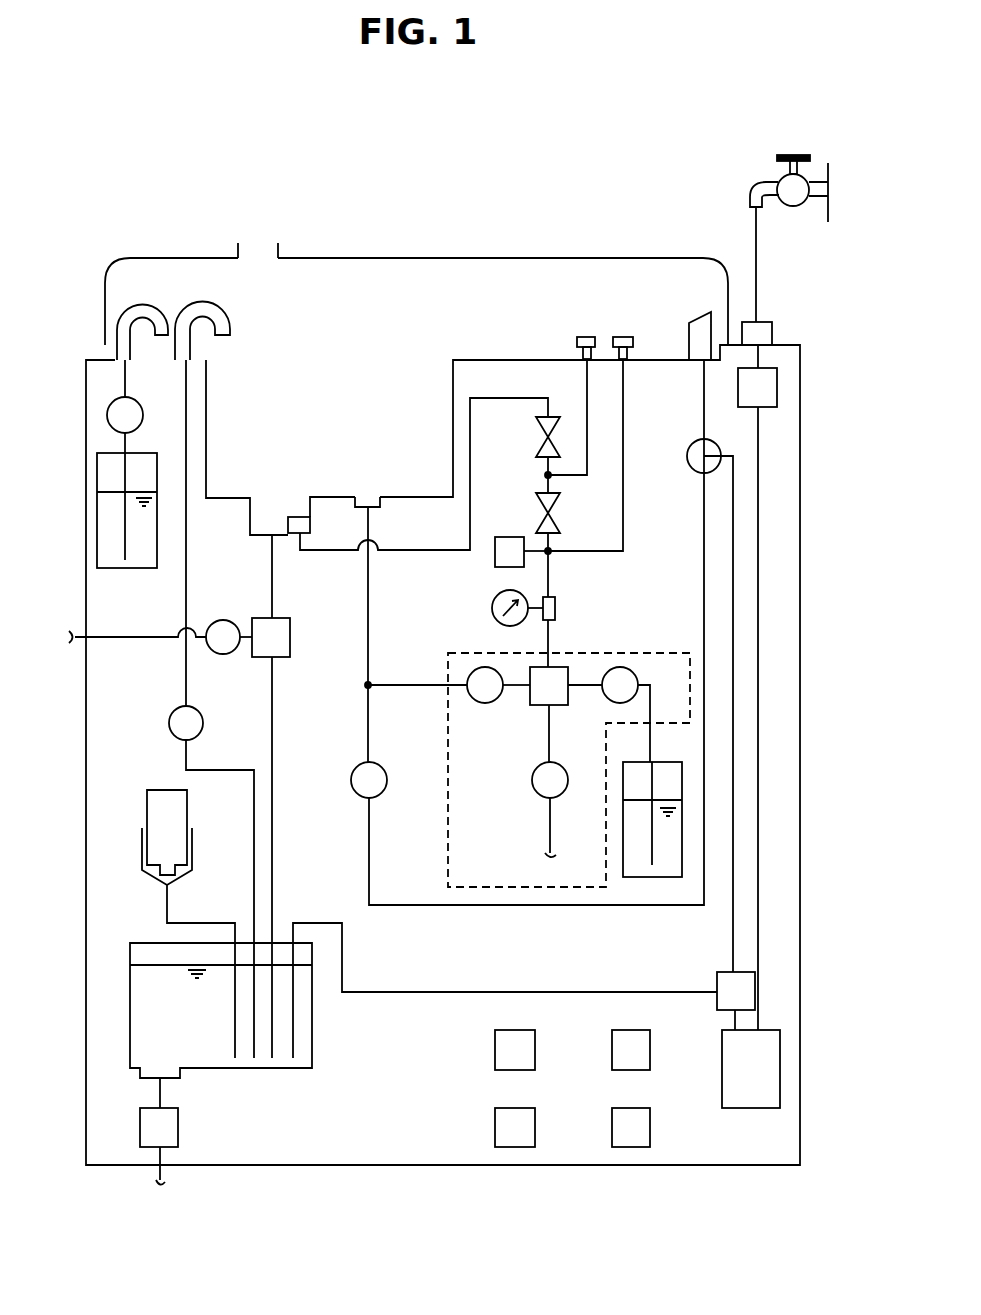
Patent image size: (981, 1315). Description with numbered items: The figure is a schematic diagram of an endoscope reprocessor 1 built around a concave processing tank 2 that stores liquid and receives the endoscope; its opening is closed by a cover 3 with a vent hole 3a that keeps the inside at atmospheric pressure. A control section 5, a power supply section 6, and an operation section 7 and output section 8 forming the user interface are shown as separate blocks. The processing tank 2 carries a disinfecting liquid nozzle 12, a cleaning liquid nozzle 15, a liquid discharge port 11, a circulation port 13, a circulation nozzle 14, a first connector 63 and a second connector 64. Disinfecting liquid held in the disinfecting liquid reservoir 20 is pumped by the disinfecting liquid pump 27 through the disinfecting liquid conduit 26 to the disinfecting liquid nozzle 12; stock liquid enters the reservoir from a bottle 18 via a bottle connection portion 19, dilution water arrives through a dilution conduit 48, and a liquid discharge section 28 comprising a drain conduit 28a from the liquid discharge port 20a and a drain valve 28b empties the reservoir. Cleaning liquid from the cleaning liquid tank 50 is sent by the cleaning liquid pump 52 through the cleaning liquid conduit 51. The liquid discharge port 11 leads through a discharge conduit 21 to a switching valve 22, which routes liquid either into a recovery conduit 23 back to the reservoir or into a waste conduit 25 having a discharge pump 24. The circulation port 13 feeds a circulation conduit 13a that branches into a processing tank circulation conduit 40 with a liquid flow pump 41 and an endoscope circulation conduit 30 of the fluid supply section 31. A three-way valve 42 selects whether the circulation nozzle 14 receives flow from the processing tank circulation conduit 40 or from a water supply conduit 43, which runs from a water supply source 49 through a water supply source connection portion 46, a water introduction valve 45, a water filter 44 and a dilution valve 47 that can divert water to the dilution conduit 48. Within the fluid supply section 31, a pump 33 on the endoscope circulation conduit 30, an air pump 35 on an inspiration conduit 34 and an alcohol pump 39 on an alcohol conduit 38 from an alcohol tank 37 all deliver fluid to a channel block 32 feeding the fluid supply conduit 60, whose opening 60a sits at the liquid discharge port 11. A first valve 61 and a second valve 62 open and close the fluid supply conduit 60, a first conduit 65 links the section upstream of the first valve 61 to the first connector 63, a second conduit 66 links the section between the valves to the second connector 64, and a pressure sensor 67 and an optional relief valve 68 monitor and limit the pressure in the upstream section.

The endoscope reprocessor 1 is at (116, 185).
The processing tank 2 is at (490, 280).
The cover 3 is at (391, 257).
The vent hole 3a is at (275, 250).
The control section 5 is at (495, 1058).
The power supply section 6 is at (612, 1053).
The operation section 7 is at (495, 1134).
The output section 8 is at (612, 1129).
The liquid discharge port 11 is at (272, 533).
The disinfecting liquid nozzle 12 is at (196, 302).
The circulation port 13 is at (368, 496).
The circulation conduit 13a is at (366, 645).
The circulation nozzle 14 is at (700, 320).
The cleaning liquid nozzle 15 is at (136, 302).
The bottle 18 is at (190, 810).
The bottle connection portion 19 is at (185, 880).
The disinfecting liquid reservoir 20 is at (145, 940).
The liquid discharge port 20a is at (160, 1075).
The discharge conduit 21 is at (270, 550).
The switching valve 22 is at (258, 618).
The recovery conduit 23 is at (275, 728).
The discharge pump 24 is at (230, 655).
The waste conduit 25 is at (108, 633).
The disinfecting liquid conduit 26 is at (185, 686).
The disinfecting liquid pump 27 is at (173, 735).
The liquid discharge section 28 is at (262, 1122).
The drain conduit 28a is at (165, 1093).
The drain valve 28b is at (180, 1128).
The endoscope circulation conduit 30 is at (403, 680).
The fluid supply section 31 is at (650, 651).
The channel block 32 is at (530, 692).
The pump 33 is at (480, 705).
The inspiration conduit 34 is at (545, 748).
The air pump 35 is at (536, 795).
The alcohol tank 37 is at (660, 762).
The alcohol conduit 38 is at (590, 690).
The alcohol pump 39 is at (640, 678).
The processing tank circulation conduit 40 is at (371, 718).
The liquid flow pump 41 is at (374, 800).
The three-way valve 42 is at (687, 445).
The water supply conduit 43 is at (727, 450).
The water filter 44 is at (782, 1065).
The water introduction valve 45 is at (780, 378).
The water supply source connection portion 46 is at (768, 322).
The dilution valve 47 is at (715, 1005).
The dilution conduit 48 is at (632, 990).
The water supply source 49 is at (775, 180).
The cleaning liquid tank 50 is at (143, 453).
The cleaning liquid conduit 51 is at (122, 377).
The cleaning liquid pump 52 is at (133, 400).
The fluid supply conduit 60 is at (430, 552).
The opening 60a is at (297, 515).
The first valve 61 is at (538, 505).
The second valve 62 is at (537, 430).
The first connector 63 is at (625, 336).
The second connector 64 is at (583, 336).
The first conduit 65 is at (585, 550).
The first conduit 66 is at (575, 474).
The pressure sensor 67 is at (492, 615).
The relief valve 68 is at (495, 558).